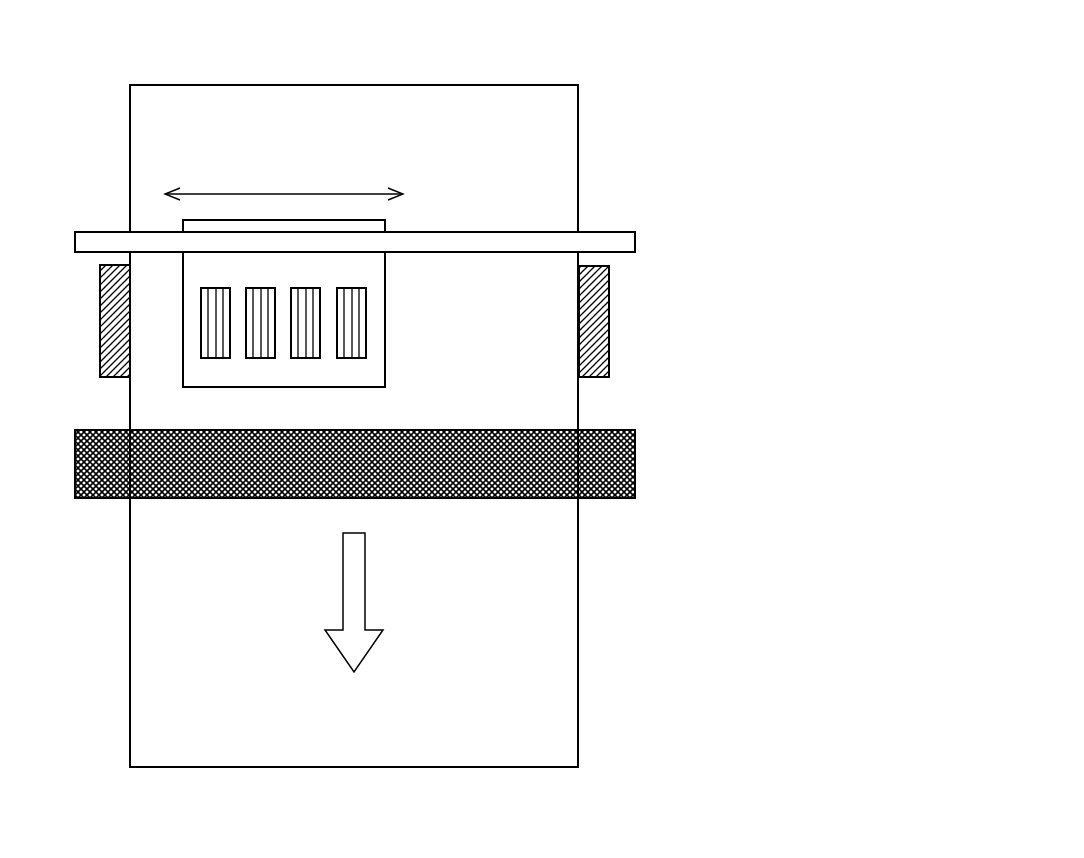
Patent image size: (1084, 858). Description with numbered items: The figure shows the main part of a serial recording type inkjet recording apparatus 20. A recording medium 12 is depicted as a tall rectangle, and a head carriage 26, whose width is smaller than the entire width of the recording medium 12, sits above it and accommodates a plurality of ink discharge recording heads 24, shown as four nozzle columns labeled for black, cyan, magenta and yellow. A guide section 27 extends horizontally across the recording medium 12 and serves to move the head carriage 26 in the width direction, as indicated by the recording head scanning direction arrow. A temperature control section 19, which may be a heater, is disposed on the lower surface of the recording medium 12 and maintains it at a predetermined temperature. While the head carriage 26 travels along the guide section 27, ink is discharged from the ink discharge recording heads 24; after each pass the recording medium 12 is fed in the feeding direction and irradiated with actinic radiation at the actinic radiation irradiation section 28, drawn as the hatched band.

The serial recording type inkjet recording apparatus 20 is at (848, 41).
The recording medium 12 is at (470, 110).
The ink discharge recording heads 24 is at (207, 326).
The head carriage 26 is at (205, 379).
The guide section 27 is at (610, 240).
The temperature control section 19 is at (600, 320).
The actinic radiation irradiation section 28 is at (602, 498).